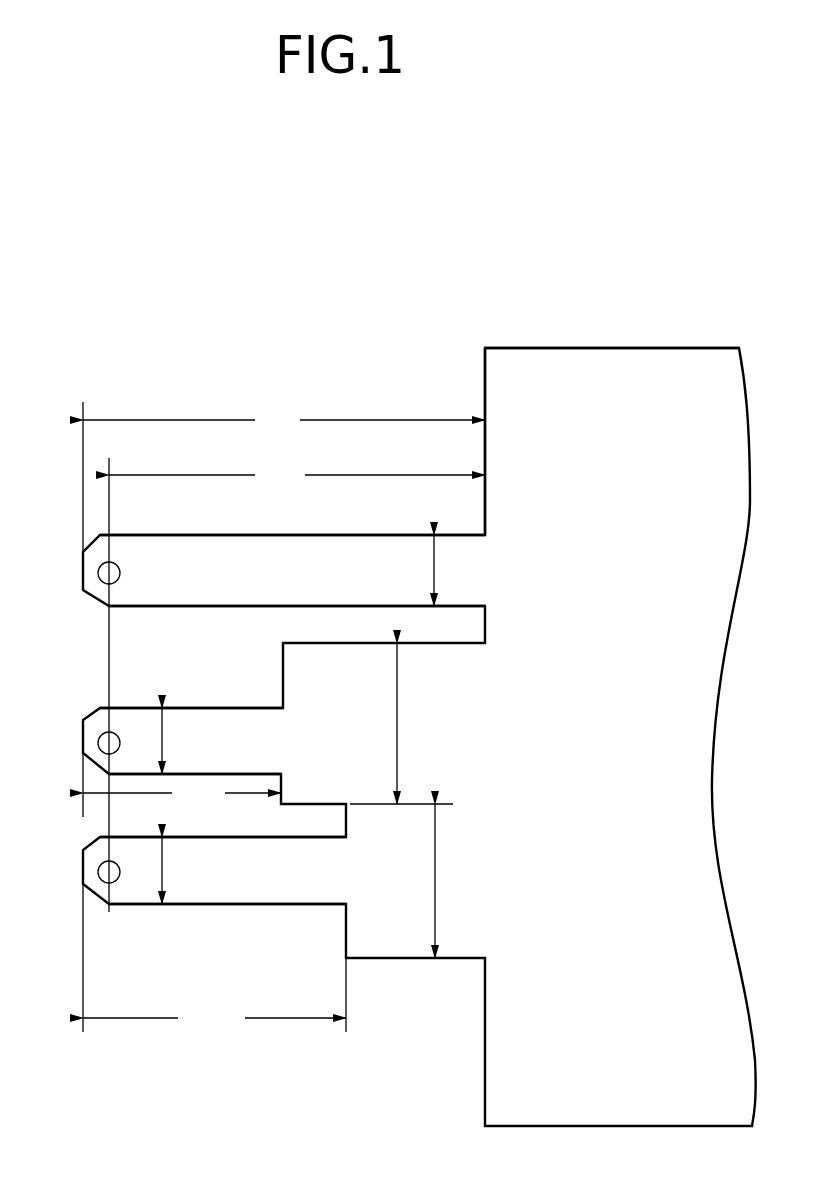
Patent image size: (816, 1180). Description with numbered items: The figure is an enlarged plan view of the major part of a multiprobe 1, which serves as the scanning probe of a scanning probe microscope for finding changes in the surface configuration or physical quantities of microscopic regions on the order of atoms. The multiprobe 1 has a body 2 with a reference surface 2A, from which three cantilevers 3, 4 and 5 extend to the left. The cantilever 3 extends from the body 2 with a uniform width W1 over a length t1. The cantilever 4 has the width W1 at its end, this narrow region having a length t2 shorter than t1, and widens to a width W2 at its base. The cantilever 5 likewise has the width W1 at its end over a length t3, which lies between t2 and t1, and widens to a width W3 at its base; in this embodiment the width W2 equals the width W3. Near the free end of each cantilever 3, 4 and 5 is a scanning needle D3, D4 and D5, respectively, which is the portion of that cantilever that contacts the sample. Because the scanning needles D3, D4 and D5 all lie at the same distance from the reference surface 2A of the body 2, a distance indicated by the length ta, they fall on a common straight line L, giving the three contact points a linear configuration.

The multiprobe 1 is at (712, 283).
The body 2 is at (628, 354).
The reference surface 2A is at (485, 365).
The cantilever 3 is at (172, 548).
The cantilever 4 is at (236, 708).
The cantilever 5 is at (253, 904).
The scanning needle D3 is at (97, 573).
The scanning needle D4 is at (97, 743).
The scanning needle D5 is at (97, 872).
The straight line L is at (109, 643).
The length t1 is at (284, 477).
The length ta is at (297, 476).
The length t2 is at (182, 785).
The length t3 is at (214, 959).
The width W1 is at (436, 572).
The width W2 is at (399, 720).
The width W3 is at (437, 884).